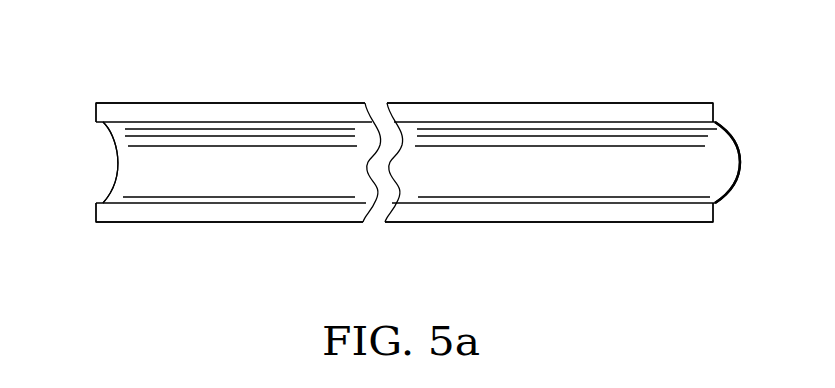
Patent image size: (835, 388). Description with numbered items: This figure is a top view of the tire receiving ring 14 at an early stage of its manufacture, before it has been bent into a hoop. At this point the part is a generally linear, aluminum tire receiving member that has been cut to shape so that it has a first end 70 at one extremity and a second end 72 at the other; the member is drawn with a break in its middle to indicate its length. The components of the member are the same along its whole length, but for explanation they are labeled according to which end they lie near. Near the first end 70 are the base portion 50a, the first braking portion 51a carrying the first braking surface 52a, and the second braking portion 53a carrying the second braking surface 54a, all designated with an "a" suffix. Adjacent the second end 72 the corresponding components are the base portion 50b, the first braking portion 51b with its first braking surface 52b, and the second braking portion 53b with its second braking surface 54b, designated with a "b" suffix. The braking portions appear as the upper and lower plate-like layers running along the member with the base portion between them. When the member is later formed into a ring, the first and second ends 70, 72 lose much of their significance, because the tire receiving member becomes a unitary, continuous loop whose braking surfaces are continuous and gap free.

The tire receiving ring 14 is at (638, 85).
The base portion 50a is at (130, 183).
The base portion 50b is at (703, 146).
The first braking portion 51a is at (230, 212).
The first braking portion 51b is at (513, 210).
The first braking surface 52a is at (125, 223).
The first braking surface 52b is at (583, 222).
The second braking portion 53a is at (300, 103).
The second braking portion 53b is at (522, 103).
The second braking surface 54a is at (152, 103).
The second braking surface 54b is at (420, 103).
The first end 70 is at (117, 173).
The second end 72 is at (736, 188).